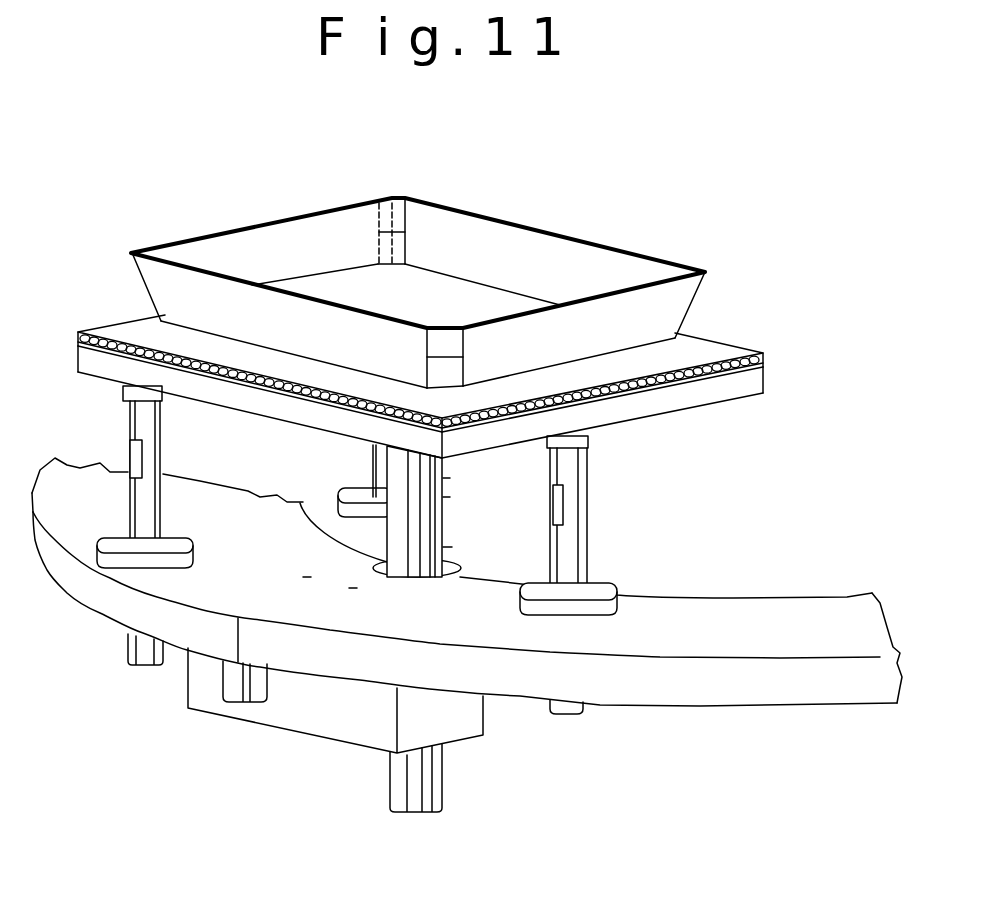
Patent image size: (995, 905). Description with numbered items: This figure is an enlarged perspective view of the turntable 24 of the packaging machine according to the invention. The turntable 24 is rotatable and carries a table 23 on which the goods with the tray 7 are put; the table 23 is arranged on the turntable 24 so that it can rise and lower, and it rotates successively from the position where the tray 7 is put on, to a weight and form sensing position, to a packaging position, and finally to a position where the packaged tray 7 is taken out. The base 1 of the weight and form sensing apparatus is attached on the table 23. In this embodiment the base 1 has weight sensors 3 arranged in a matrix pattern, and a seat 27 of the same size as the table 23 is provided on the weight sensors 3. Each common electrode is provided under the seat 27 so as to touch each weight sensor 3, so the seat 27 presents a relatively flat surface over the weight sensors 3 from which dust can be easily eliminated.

The base 1 is at (419, 336).
The weight sensors 3 is at (665, 378).
The tray 7 is at (538, 243).
The table 23 is at (745, 387).
The turntable 24 is at (658, 697).
The seat 27 is at (213, 350).